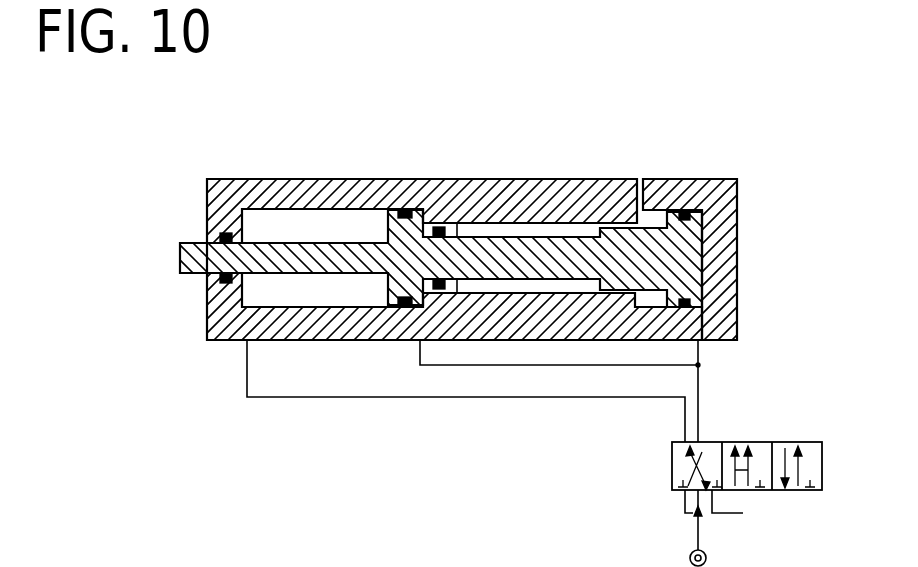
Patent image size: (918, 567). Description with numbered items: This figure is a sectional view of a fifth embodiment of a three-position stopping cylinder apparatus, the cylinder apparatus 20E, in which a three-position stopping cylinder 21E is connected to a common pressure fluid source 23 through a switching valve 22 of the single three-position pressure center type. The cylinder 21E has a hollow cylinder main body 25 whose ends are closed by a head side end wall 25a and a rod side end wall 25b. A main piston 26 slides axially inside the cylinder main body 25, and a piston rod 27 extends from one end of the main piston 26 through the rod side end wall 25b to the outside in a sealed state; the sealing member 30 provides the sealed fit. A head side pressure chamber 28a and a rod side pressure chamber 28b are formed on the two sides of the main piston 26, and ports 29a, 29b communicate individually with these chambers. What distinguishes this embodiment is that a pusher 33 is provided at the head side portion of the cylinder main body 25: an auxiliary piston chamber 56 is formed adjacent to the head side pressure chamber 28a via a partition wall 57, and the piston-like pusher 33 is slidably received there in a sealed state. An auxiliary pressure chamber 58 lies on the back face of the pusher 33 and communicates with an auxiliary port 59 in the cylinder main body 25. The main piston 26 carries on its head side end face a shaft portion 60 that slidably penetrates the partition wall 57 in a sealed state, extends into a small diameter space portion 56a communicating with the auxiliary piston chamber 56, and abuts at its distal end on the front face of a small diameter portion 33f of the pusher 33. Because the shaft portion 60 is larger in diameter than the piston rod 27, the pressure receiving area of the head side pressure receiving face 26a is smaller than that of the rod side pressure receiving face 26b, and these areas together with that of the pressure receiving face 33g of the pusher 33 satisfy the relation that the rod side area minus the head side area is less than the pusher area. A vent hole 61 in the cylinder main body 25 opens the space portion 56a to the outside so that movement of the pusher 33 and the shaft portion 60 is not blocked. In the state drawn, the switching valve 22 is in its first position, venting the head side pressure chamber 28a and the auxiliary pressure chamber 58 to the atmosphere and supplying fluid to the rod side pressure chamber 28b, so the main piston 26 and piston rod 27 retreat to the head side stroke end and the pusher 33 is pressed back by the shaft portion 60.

The cylinder apparatus 20E is at (469, 321).
The 3-position stopping cylinder 21E is at (538, 173).
The switching valve 22 is at (764, 442).
The pressure fluid source 23 is at (708, 558).
The cylinder main body 25 is at (516, 200).
The head side end wall 25a is at (722, 305).
The rod side end wall 25b is at (221, 300).
The main piston 26 is at (398, 208).
The head side pressure receiving face 26a is at (438, 292).
The rod side pressure receiving face 26b is at (388, 302).
The piston rod 27 is at (200, 242).
The head side pressure chamber 28a is at (430, 224).
The rod side pressure chamber 28b is at (300, 225).
The port 29a is at (418, 340).
The port 29b is at (248, 340).
The sealing member 30 is at (685, 210).
The pusher 33 is at (690, 257).
The small diameter portion of pusher 33f is at (622, 275).
The pressure receiving face of pusher 33g is at (690, 226).
The auxiliary piston chamber 56 is at (653, 220).
The small diameter space portion 56a is at (553, 290).
The partition wall 57 is at (452, 226).
The auxiliary pressure chamber 58 is at (720, 290).
The auxiliary port 59 is at (710, 346).
The shaft portion 60 is at (556, 252).
The vent hole 61 is at (634, 212).